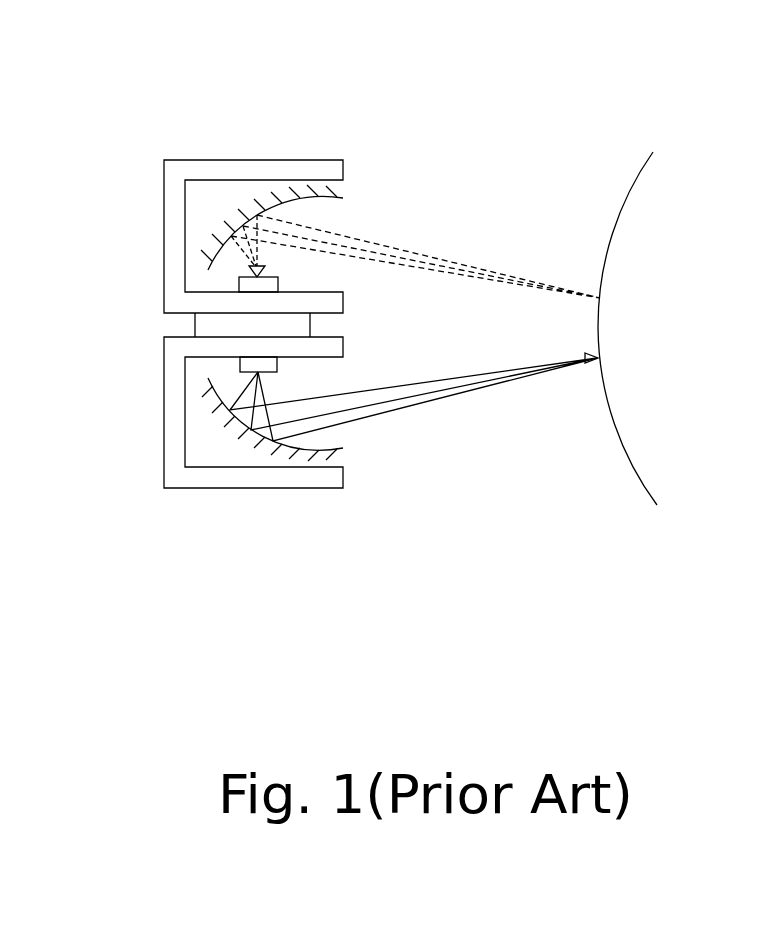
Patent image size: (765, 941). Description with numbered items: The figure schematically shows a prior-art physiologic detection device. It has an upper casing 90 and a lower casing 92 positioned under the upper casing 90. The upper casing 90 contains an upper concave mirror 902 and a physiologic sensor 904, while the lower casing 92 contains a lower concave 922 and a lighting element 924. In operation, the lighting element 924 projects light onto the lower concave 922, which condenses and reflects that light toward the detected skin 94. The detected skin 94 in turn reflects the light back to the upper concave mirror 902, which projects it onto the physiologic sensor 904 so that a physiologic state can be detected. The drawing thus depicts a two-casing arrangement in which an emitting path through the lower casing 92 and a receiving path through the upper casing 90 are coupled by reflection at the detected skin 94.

The upper casing 90 is at (217, 168).
The upper concave mirror 902 is at (220, 227).
The physiologic sensor 904 is at (263, 283).
The lower casing 92 is at (205, 482).
The lower concave 922 is at (227, 422).
The lighting element 924 is at (270, 360).
The detected skin 94 is at (623, 207).